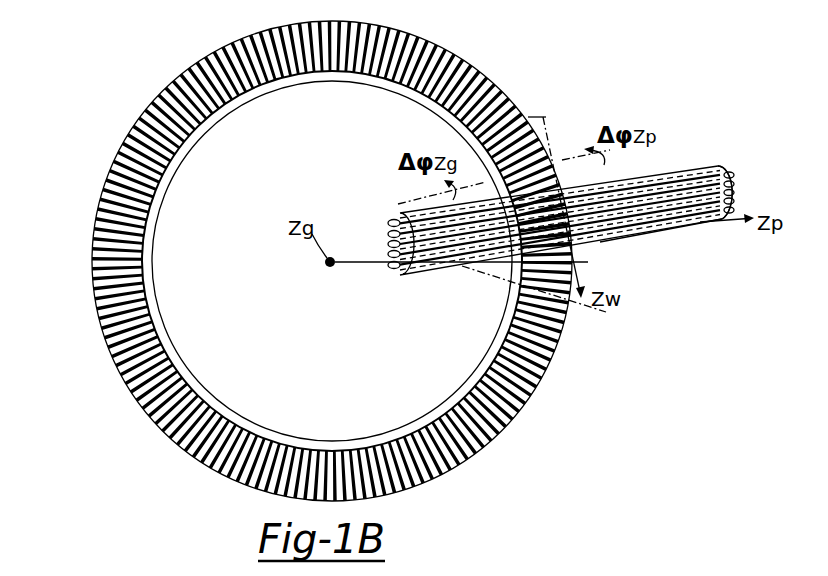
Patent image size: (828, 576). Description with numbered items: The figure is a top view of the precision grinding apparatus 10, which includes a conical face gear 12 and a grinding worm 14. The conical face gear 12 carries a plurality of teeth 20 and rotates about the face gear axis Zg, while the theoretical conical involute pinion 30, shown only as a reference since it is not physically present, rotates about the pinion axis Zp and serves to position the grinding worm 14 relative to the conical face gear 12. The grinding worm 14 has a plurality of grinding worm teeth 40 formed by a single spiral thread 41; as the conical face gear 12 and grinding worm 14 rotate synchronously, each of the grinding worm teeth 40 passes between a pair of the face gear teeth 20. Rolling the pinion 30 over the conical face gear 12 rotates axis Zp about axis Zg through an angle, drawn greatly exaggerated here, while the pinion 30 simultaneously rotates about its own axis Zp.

The precision grinding apparatus 10 is at (417, 250).
The conical face gear 12 is at (332, 250).
The grinding worm 14 is at (588, 192).
The teeth 20 is at (456, 62).
The theoretical conical involute pinion 30 is at (566, 162).
The grinding worm teeth 40 is at (722, 171).
The single spiral thread 41 is at (706, 220).